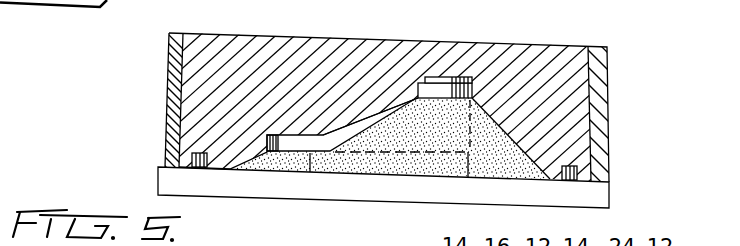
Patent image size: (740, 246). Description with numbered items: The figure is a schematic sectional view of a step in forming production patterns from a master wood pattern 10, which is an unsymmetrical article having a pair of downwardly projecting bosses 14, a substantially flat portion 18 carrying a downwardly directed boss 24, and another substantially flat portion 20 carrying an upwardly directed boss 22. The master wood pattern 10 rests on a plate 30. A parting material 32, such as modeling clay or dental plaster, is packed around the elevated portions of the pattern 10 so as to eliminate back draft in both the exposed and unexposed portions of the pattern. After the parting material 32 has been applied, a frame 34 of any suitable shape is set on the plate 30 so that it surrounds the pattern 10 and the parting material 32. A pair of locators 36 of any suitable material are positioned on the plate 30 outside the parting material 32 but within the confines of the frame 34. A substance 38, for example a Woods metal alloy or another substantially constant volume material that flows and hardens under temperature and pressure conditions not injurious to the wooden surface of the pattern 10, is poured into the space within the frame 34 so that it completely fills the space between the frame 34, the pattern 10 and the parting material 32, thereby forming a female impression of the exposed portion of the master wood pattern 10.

The master wood pattern 10 is at (392, 104).
The downwardly projecting bosses 14 is at (387, 191).
The substantially flat portion 18 is at (296, 146).
The substantially flat portion 20 is at (462, 97).
The upwardly directed boss 22 is at (438, 78).
The downwardly directed boss 24 is at (292, 158).
The plate 30 is at (598, 196).
The parting material 32 is at (500, 168).
The frame 34 is at (597, 100).
The locators 36 is at (193, 162).
The substance 38 is at (312, 44).